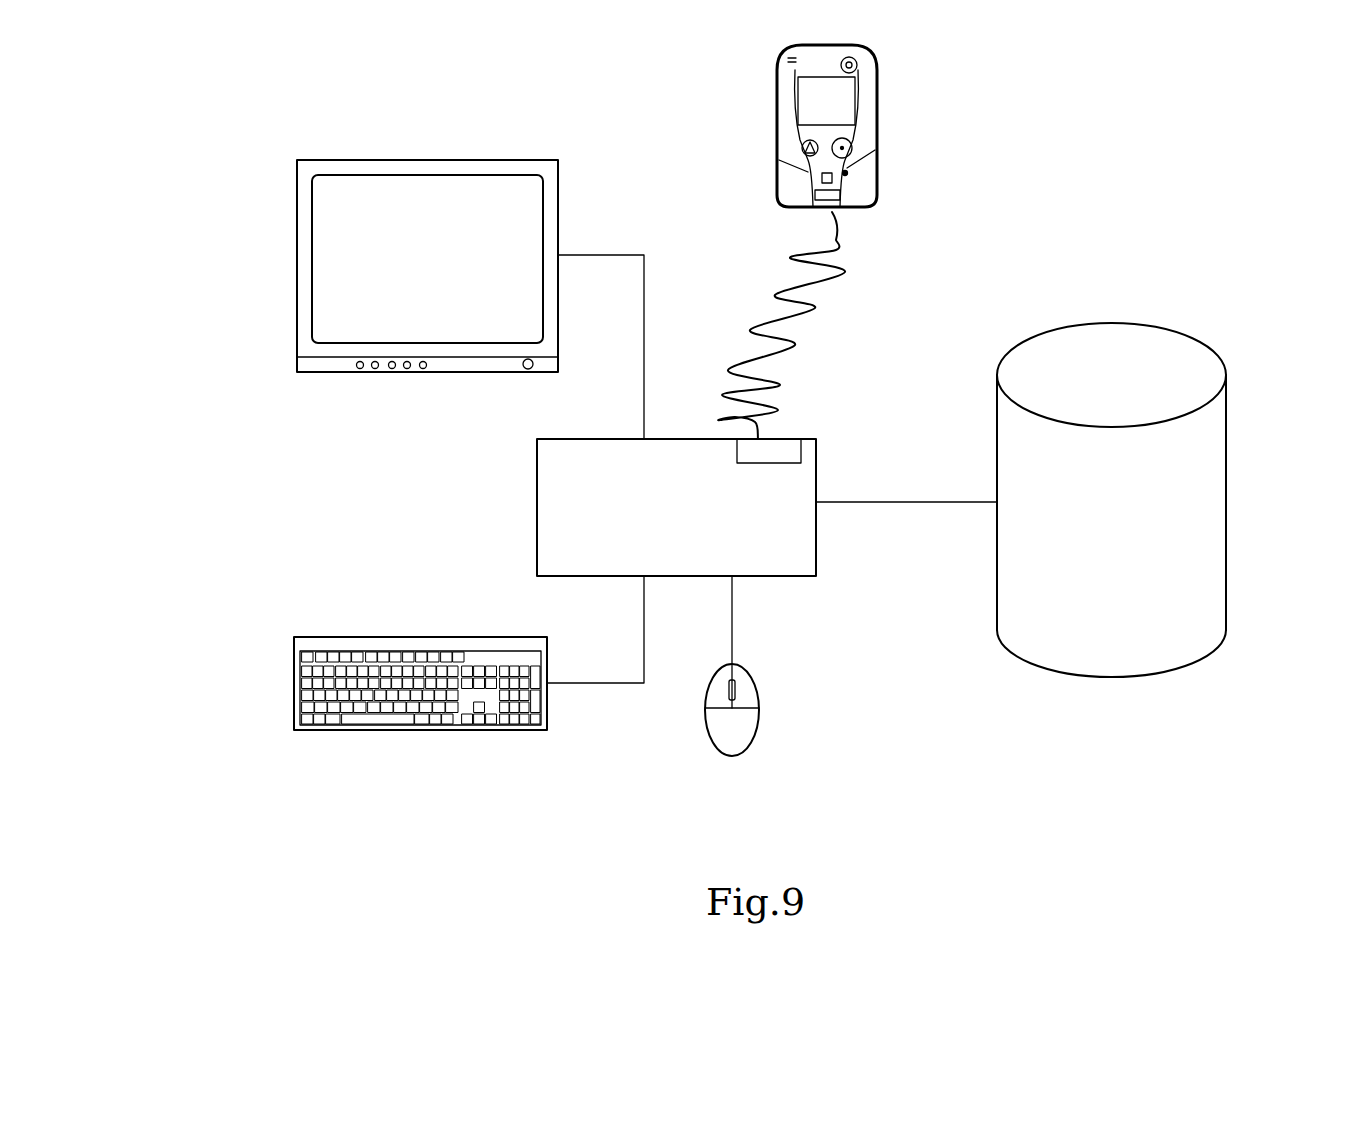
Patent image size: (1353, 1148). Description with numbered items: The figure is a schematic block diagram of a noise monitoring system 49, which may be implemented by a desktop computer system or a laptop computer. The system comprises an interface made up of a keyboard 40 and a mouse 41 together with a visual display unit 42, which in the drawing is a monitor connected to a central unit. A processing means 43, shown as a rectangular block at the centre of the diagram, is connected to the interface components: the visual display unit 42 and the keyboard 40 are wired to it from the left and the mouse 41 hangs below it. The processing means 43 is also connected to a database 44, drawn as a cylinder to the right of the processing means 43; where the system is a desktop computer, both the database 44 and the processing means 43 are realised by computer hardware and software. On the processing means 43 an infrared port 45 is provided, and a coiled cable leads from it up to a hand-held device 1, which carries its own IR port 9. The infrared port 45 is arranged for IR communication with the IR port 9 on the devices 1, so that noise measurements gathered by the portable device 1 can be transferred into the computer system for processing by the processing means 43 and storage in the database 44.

The device 1 is at (875, 122).
The IR port 9 is at (832, 212).
The keyboard 40 is at (422, 730).
The mouse 41 is at (758, 730).
The visual display unit 42 is at (558, 193).
The processing means 43 is at (797, 576).
The database 44 is at (1164, 671).
The IR port 45 is at (787, 439).
The system 49 is at (282, 538).